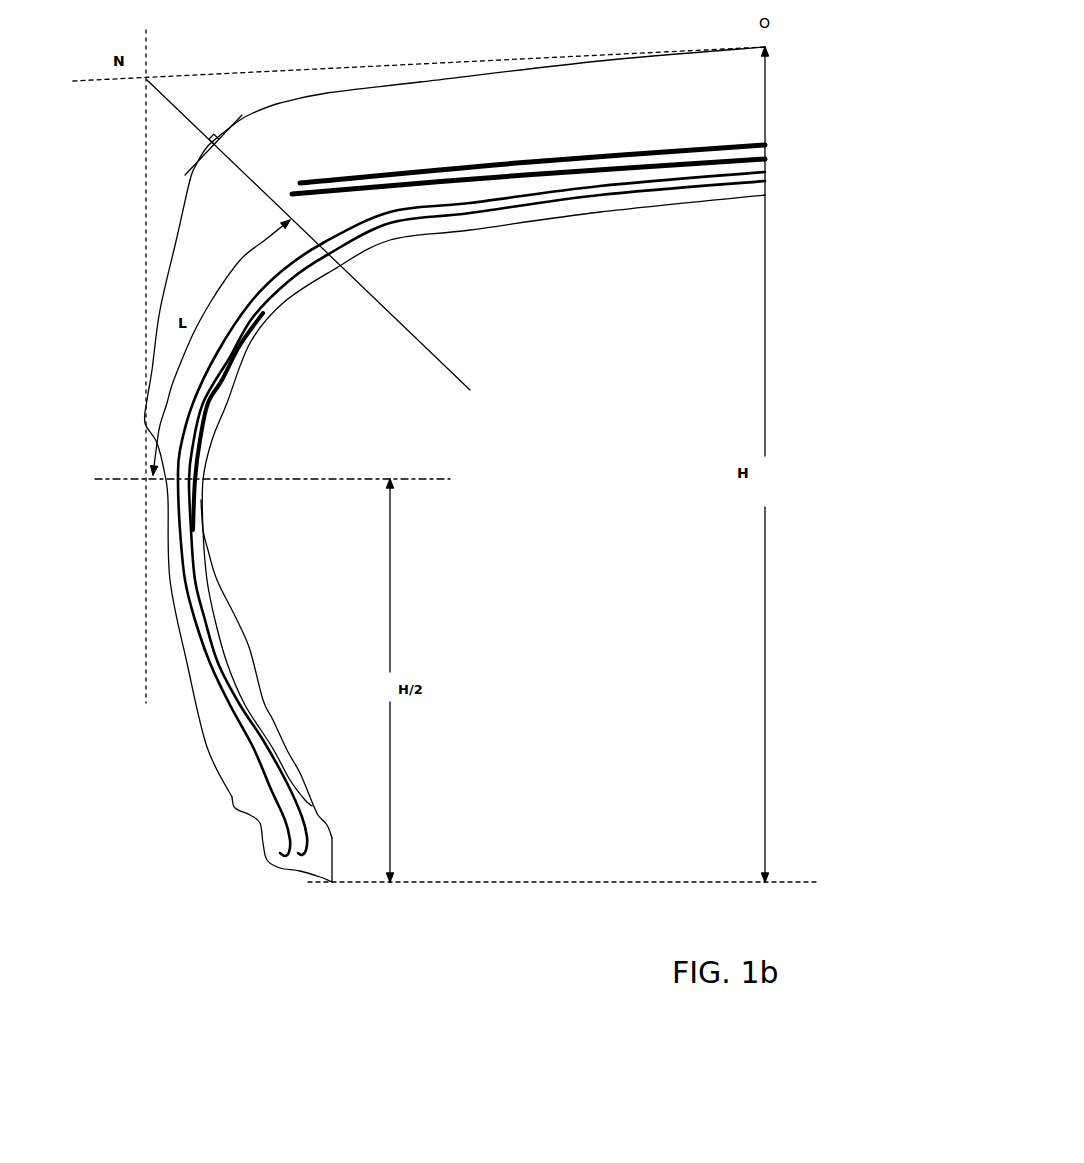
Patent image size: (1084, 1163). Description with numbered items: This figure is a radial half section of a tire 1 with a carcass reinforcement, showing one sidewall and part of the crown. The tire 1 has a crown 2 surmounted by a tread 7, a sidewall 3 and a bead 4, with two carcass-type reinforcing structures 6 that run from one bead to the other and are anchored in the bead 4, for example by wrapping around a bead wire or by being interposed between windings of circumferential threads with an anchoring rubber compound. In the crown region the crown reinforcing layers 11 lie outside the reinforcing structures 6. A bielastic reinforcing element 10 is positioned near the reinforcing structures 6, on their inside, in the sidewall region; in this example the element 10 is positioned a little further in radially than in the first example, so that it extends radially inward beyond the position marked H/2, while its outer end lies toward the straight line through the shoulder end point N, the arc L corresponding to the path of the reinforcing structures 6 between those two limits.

The tire 1 is at (180, 740).
The crown 2 is at (500, 147).
The sidewall 3 is at (187, 633).
The bead 4 is at (297, 830).
The carcass-type reinforcing structure 6 is at (220, 697).
The tread 7 is at (555, 66).
The bielastic reinforcing element 10 is at (215, 397).
The crown reinforcing layer 11 is at (663, 163).